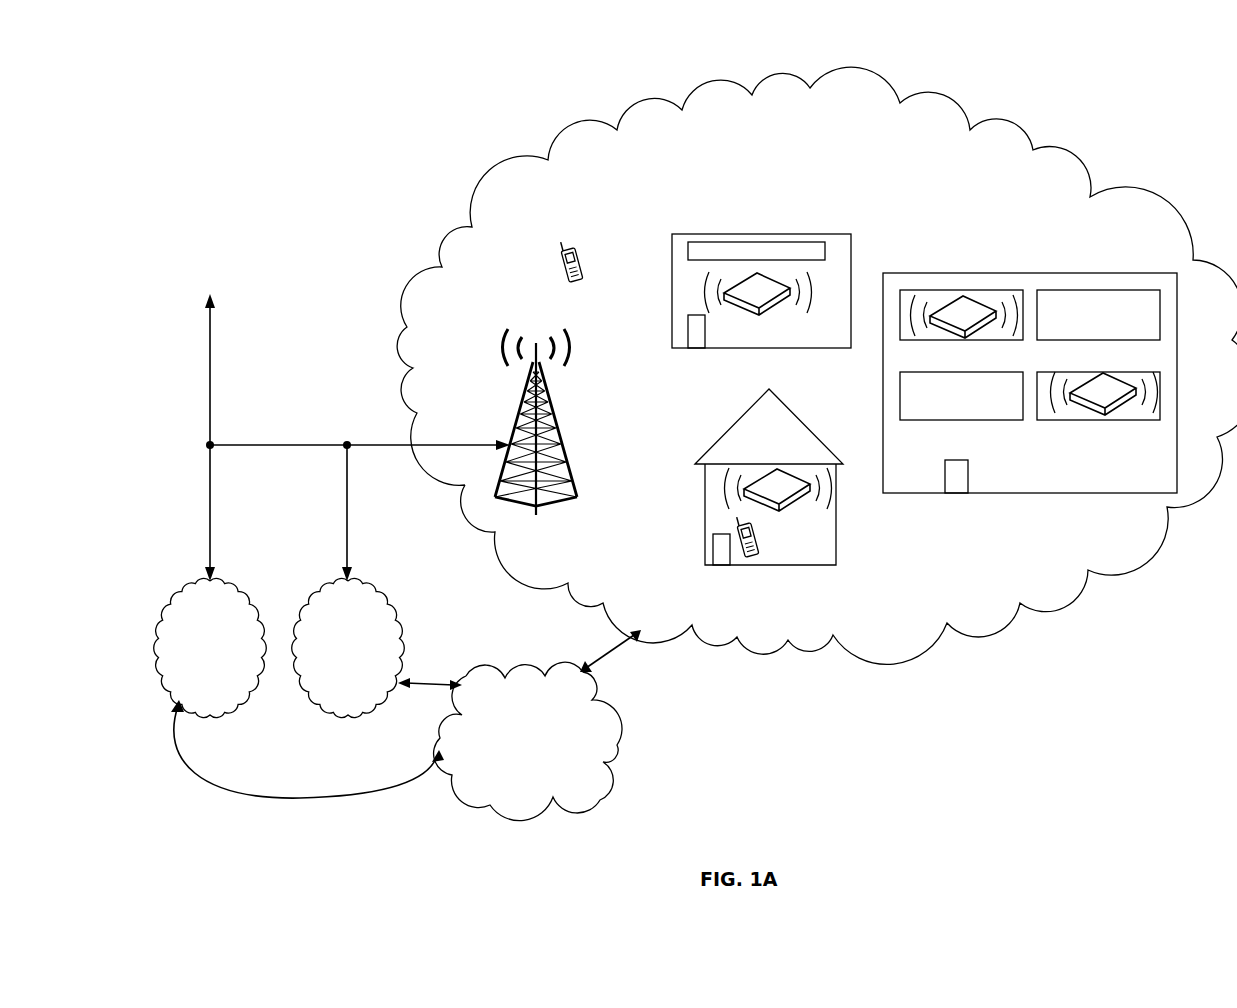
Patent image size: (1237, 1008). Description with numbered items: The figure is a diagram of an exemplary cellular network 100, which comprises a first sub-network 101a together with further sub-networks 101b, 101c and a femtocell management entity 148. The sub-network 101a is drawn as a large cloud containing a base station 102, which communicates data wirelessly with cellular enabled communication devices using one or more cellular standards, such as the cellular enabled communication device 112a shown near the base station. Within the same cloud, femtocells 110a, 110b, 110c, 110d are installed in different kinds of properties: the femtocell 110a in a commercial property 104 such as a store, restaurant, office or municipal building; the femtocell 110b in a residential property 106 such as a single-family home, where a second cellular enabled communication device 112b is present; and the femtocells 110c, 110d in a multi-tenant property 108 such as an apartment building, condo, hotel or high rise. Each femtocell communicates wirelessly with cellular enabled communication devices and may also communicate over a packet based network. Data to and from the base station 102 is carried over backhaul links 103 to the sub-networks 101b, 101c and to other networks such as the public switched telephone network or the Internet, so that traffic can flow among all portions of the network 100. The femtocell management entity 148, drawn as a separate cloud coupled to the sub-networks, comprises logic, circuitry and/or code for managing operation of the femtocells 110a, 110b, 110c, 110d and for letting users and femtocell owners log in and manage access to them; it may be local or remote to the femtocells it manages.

The cellular network 100 is at (178, 116).
The sub-network 101a is at (692, 85).
The sub-network 101b is at (212, 716).
The sub-network 101c is at (350, 716).
The base station 102 is at (553, 435).
The backhaul links 103 is at (283, 445).
The commercial properties 104 is at (703, 233).
The residential properties 106 is at (738, 418).
The multi-tenant properties 108 is at (1177, 305).
The femtocell 110a is at (764, 306).
The femtocell 110b is at (781, 508).
The femtocell 110c is at (968, 333).
The femtocell 110d is at (1110, 410).
The cellular enabled communication device 112a is at (575, 249).
The cellular enabled communication device 112b is at (752, 559).
The femtocell management entity 148 is at (529, 664).